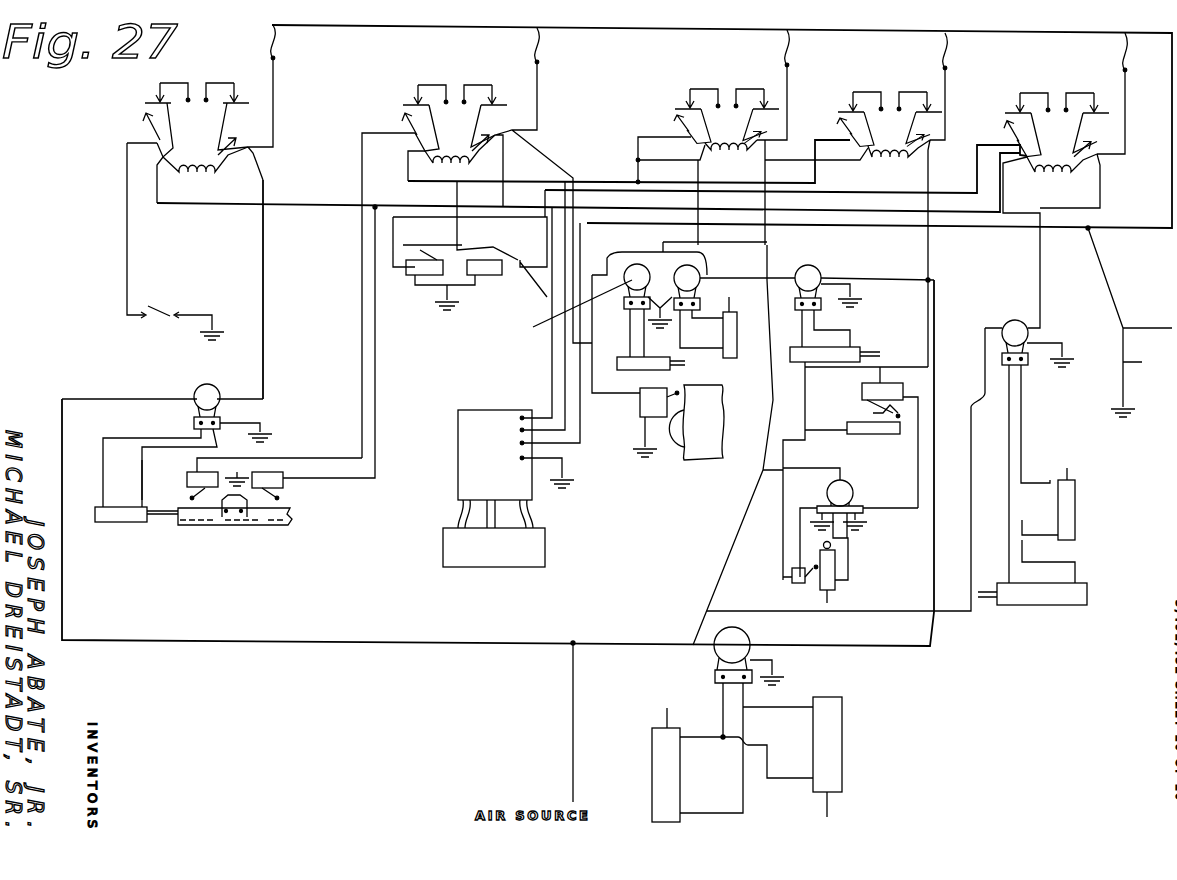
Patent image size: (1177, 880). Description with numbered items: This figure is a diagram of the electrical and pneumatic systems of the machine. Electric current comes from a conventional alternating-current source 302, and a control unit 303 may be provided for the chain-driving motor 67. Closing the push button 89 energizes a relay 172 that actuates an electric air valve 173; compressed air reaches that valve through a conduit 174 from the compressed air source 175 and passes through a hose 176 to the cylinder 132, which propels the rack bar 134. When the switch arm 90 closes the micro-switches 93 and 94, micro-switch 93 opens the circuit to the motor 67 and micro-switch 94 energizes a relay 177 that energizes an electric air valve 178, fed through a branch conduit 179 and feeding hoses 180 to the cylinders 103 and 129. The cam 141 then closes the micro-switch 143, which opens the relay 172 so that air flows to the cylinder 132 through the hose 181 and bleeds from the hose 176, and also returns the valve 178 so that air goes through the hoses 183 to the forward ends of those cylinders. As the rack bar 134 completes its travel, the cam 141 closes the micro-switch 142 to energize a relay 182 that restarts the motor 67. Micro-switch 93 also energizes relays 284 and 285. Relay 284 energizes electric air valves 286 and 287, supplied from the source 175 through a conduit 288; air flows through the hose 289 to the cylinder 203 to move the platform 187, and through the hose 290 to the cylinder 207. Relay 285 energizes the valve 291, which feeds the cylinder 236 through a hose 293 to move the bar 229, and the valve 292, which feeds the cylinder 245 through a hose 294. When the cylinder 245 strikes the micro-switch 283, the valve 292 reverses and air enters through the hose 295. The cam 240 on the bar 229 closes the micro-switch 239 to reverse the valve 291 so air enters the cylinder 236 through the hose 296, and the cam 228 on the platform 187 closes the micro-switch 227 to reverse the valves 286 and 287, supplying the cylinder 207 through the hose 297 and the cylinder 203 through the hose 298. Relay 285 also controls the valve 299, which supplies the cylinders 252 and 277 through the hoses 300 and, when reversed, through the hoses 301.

The relay 172 is at (210, 81).
The relay 182 is at (455, 90).
The relay 284 is at (728, 90).
The relay 285 is at (897, 83).
The relay 177 is at (1058, 98).
The push button 89 is at (163, 310).
The switch arm 90 is at (520, 258).
The micro-switch 93 is at (415, 276).
The micro-switch 94 is at (493, 276).
The electric air valve 287 is at (561, 310).
The control unit 303 is at (493, 410).
The motor 67 is at (443, 553).
The electric air valve 173 is at (212, 392).
The hose 176 is at (160, 438).
The hose 181 is at (142, 470).
The cylinder 132 is at (127, 518).
The micro-switch 142 is at (187, 478).
The micro-switch 143 is at (278, 473).
The cam 141 is at (238, 517).
The rack bar 134 is at (293, 513).
The hose 290 is at (640, 322).
The hose 297 is at (642, 342).
The cylinder 207 is at (632, 365).
The electric air valve 286 is at (698, 276).
The hose 298 is at (708, 310).
The hose 289 is at (698, 345).
The cylinder 203 is at (738, 335).
The conduit 288 is at (775, 278).
The hose 293 is at (757, 406).
The electric air valve 291 is at (810, 278).
The hose 296 is at (843, 335).
The cylinder 236 is at (857, 349).
The micro-switch 239 is at (862, 392).
The cam 240 is at (870, 416).
The bar 229 is at (880, 428).
The micro-switch 227 is at (647, 403).
The cam 228 is at (696, 422).
The platform 187 is at (710, 452).
The electric air valve 292 is at (851, 492).
The hose 294 is at (840, 553).
The cylinder 245 is at (828, 573).
The hose 295 is at (850, 582).
The micro-switch 283 is at (807, 587).
The branch conduit 179 is at (970, 468).
The electric air valve 178 is at (1013, 322).
The hoses 183 is at (1008, 467).
The cylinder 103 is at (1077, 503).
The hoses 180 is at (1037, 530).
The cylinder 129 is at (1088, 592).
The alternating current source 302 is at (1129, 321).
The conduit 174 is at (512, 645).
The compressed air source 175 is at (573, 802).
The electric air valve 299 is at (750, 642).
The hoses 300 is at (747, 722).
The hoses 301 is at (714, 738).
The cylinder 252 is at (670, 777).
The cylinder 277 is at (843, 730).